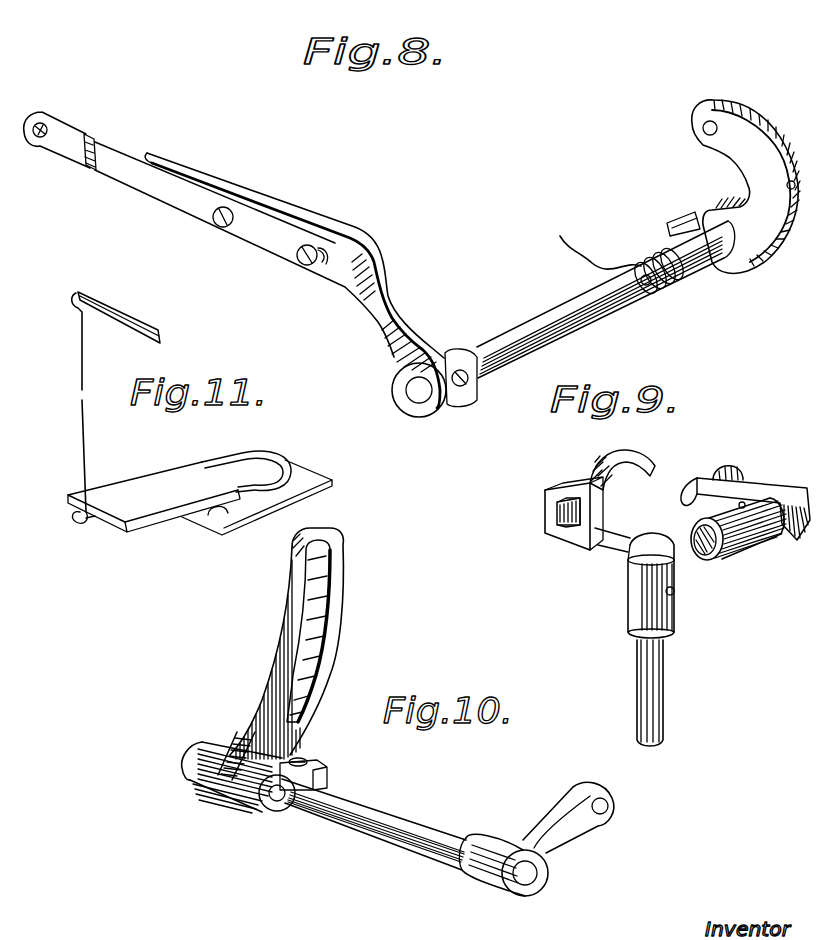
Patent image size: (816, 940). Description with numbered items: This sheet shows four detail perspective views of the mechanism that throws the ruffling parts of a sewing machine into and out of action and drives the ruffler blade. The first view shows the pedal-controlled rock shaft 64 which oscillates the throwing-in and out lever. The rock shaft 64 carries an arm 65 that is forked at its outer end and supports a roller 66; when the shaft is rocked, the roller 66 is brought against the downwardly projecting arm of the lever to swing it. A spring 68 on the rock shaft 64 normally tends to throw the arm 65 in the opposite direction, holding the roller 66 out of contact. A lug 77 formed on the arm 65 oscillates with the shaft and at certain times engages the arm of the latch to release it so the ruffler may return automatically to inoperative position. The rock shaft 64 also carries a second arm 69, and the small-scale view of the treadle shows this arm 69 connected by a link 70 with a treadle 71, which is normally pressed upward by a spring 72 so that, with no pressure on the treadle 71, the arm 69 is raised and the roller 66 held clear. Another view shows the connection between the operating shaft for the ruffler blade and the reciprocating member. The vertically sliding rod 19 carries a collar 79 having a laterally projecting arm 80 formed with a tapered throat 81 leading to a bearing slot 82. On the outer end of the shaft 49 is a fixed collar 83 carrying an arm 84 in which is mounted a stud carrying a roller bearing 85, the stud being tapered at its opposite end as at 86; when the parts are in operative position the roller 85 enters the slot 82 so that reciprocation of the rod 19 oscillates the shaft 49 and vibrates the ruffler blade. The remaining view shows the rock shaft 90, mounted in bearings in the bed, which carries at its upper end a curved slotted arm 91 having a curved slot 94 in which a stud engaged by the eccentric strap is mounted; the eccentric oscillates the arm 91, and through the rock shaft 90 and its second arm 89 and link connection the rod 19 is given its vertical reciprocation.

In FIG. 8, the second arm 69 is at (312, 228).
In FIG. 11, the second arm 69 is at (137, 322).
In FIG. 8, the lug 77 is at (680, 224).
In FIG. 8, the rock shaft 64 is at (577, 328).
In FIG. 8, the spring 68 is at (598, 262).
In FIG. 8, the arm 65 is at (722, 167).
In FIG. 8, the roller 66 is at (714, 99).
In FIG. 11, the link 70 is at (78, 378).
In FIG. 11, the treadle 71 is at (138, 487).
In FIG. 11, the spring 72 is at (218, 516).
In FIG. 9, the rod 19 is at (647, 690).
In FIG. 9, the collar 79 is at (636, 598).
In FIG. 9, the laterally projecting arm 80 is at (563, 538).
In FIG. 9, the tapered throat 81 is at (600, 530).
In FIG. 9, the bearing slot 82 is at (557, 514).
In FIG. 9, the fixed collar 83 is at (746, 542).
In FIG. 9, the shaft 49 is at (706, 555).
In FIG. 9, the arm 84 is at (750, 484).
In FIG. 9, the roller bearing 85 is at (728, 465).
In FIG. 9, the tapered end 86 is at (684, 488).
In FIG. 10, the curved slot 94 is at (328, 615).
In FIG. 10, the curved slotted arm 91 is at (329, 698).
In FIG. 10, the rock shaft 90 is at (388, 818).
In FIG. 10, the second arm 89 is at (572, 843).